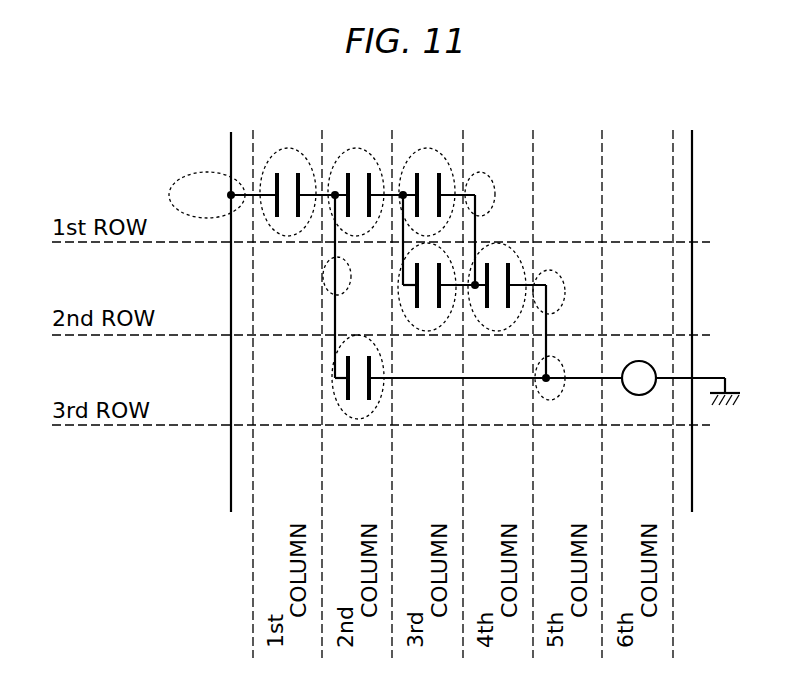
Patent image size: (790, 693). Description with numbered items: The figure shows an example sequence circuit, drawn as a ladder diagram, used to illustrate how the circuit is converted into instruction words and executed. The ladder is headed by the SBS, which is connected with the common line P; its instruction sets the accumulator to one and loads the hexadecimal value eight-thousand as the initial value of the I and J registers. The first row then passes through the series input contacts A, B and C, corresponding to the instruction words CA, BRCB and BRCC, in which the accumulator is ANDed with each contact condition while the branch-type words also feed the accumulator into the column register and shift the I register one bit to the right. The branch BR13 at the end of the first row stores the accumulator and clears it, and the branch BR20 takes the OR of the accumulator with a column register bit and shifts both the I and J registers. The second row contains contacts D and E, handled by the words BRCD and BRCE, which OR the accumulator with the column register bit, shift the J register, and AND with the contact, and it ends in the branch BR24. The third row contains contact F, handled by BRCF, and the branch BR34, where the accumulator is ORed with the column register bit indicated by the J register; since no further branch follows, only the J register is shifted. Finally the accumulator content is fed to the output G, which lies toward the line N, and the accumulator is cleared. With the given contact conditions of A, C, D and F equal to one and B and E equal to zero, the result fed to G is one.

The common line P is at (231, 482).
The negative bus line N is at (713, 321).
The head of the ladder diagram SBS is at (207, 195).
The contact A instruction CA is at (288, 163).
The input contact A is at (287, 183).
The input contact B is at (358, 183).
The input contact C is at (428, 183).
The input contact D is at (428, 275).
The input contact E is at (497, 275).
The input contact F is at (358, 366).
The output G is at (639, 366).
The branch contact B instruction BRCB is at (359, 163).
The branch contact C instruction BRCC is at (434, 163).
The branch contact D instruction BRCD is at (426, 305).
The branch contact E instruction BRCE is at (533, 286).
The branch contact F instruction BRCF is at (320, 376).
The branch point in first row, third column BR13 is at (487, 172).
The branch point in second row BR20 is at (323, 292).
The branch point in second row, fourth column BR24 is at (563, 300).
The branch point in third row, fourth column BR34 is at (549, 400).